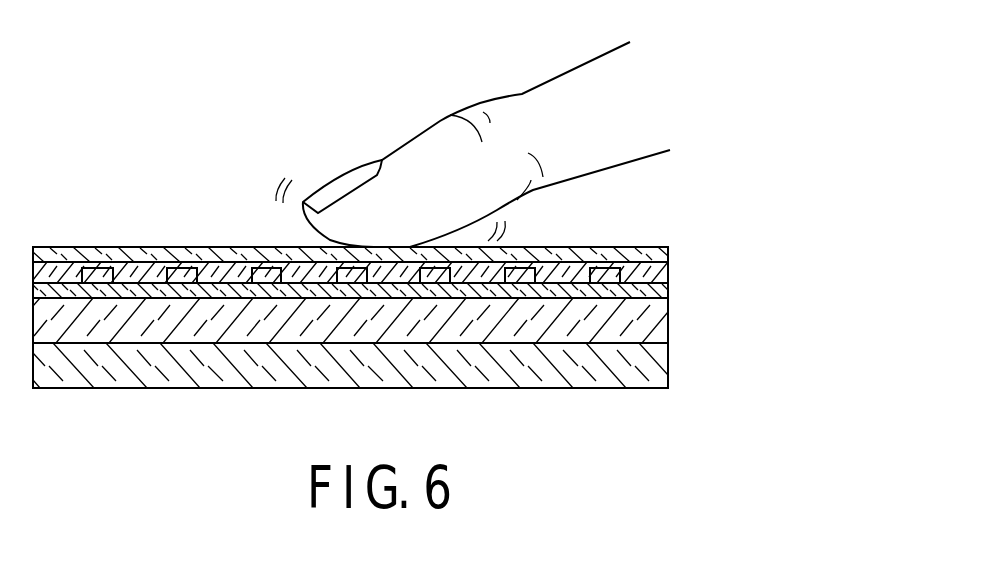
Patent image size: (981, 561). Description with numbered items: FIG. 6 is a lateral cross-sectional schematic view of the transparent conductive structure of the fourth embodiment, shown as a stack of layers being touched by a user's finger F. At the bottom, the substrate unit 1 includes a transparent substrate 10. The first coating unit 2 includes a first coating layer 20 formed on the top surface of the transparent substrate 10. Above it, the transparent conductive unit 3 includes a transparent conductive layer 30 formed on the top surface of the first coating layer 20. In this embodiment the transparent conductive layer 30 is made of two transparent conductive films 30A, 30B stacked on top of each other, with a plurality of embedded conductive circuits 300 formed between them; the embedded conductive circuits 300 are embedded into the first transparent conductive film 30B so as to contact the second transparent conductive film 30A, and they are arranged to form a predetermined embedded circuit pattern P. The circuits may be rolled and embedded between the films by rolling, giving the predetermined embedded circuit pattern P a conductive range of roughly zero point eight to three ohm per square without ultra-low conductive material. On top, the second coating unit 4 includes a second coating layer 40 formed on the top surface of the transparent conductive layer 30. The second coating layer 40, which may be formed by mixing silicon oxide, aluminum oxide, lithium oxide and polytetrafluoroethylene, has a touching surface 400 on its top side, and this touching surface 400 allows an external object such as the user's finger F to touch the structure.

The user's finger F is at (378, 150).
The predetermined embedded circuit pattern P is at (259, 269).
The touching surface 400 is at (100, 247).
The embedded conductive circuits 300 is at (187, 262).
The second coating unit 4 is at (410, 234).
The second coating layer 40 is at (621, 255).
The transparent conductive unit 3 is at (433, 278).
The transparent conductive layer 30 is at (418, 278).
The first transparent conductive film 30B is at (662, 275).
The second transparent conductive film 30A is at (662, 289).
The first coating unit 2 is at (405, 321).
The first coating layer 20 is at (662, 327).
The substrate unit 1 is at (405, 370).
The transparent substrate 10 is at (655, 365).